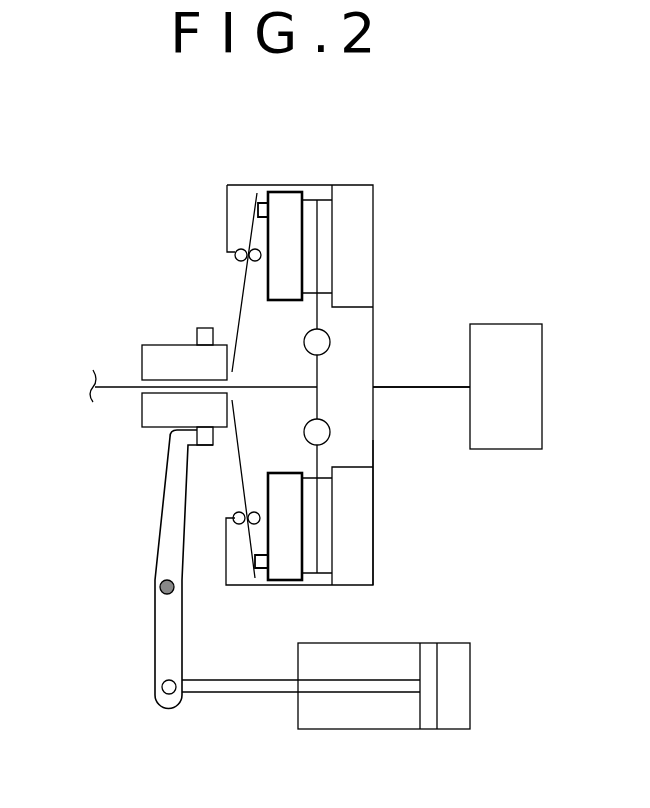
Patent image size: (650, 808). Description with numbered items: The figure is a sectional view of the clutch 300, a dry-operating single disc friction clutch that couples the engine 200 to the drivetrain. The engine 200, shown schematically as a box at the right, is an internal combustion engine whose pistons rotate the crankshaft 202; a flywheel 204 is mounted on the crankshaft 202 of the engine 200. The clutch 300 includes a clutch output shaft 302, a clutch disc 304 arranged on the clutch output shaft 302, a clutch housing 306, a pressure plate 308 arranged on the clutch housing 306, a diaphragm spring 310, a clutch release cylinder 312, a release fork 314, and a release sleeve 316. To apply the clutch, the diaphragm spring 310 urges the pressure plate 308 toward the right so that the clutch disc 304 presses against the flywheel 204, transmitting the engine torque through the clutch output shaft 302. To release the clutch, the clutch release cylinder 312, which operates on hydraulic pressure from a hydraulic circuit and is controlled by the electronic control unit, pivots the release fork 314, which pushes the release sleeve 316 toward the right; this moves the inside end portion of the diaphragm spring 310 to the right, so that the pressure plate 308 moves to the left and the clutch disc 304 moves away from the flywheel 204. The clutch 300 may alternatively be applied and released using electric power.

The engine 200 is at (508, 323).
The crankshaft 202 is at (413, 383).
The flywheel 204 is at (375, 466).
The clutch 300 is at (356, 155).
The clutch output shaft 302 is at (122, 382).
The clutch disc 304 is at (308, 193).
The clutch housing 306 is at (287, 587).
The pressure plate 308 is at (278, 187).
The diaphragm spring 310 is at (245, 287).
The clutch release cylinder 312 is at (368, 729).
The release fork 314 is at (163, 640).
The release sleeve 316 is at (150, 417).